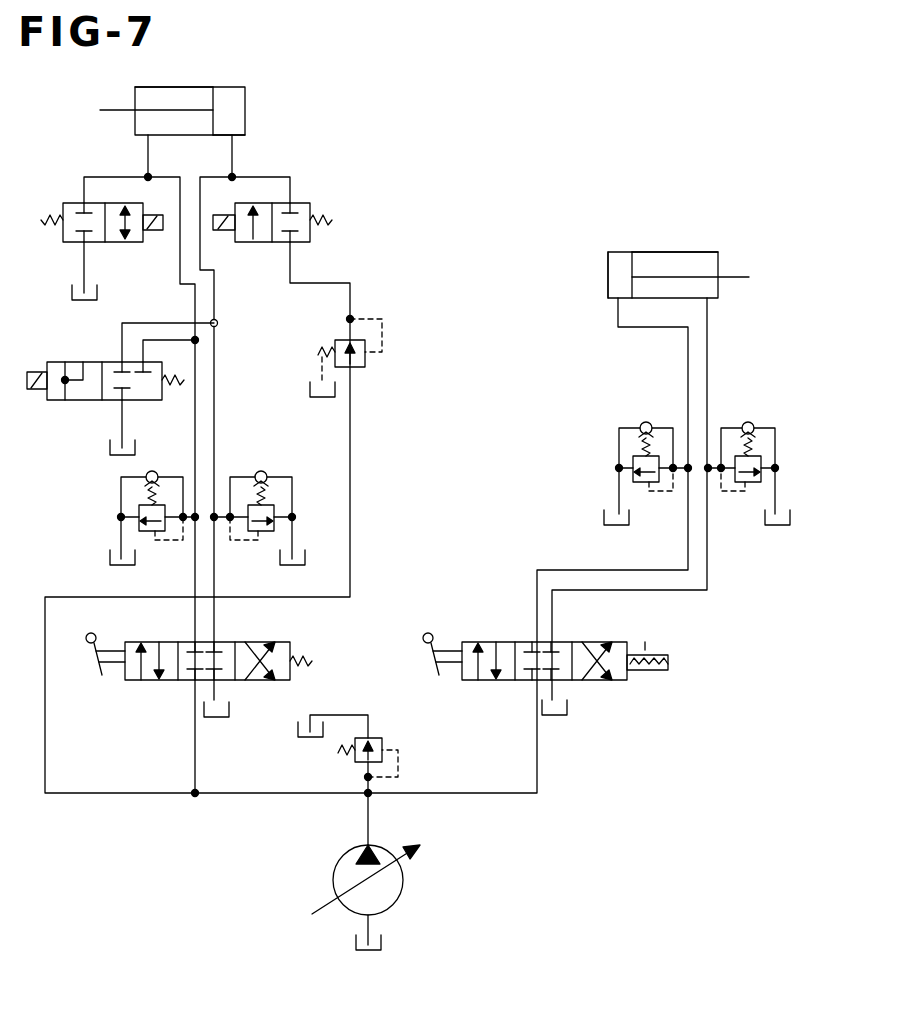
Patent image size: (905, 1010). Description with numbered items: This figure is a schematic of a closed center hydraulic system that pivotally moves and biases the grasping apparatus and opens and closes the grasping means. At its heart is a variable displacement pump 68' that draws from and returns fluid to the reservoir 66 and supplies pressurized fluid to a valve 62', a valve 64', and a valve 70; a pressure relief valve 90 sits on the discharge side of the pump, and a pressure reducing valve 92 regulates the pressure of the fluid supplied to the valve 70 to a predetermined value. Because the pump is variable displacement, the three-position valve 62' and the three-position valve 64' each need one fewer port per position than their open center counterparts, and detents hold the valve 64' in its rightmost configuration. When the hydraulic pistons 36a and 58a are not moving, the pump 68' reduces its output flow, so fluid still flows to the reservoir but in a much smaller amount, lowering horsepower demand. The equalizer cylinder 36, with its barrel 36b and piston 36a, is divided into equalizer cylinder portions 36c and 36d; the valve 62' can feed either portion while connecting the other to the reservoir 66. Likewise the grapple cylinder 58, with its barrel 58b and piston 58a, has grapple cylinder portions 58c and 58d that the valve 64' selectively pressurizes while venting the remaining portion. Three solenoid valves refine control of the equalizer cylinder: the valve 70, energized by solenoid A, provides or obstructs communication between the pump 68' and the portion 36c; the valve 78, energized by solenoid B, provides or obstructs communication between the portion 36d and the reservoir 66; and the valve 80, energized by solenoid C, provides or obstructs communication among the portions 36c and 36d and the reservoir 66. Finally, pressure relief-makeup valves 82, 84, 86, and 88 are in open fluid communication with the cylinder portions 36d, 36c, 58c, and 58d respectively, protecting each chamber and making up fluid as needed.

The equalizer cylinder 36 is at (191, 80).
The hydraulic piston 36a is at (218, 95).
The equalizer cylinder barrel 36b is at (151, 86).
The equalizer cylinder portion 36c is at (236, 121).
The equalizer cylinder portion 36d is at (145, 122).
The grapple cylinder 58 is at (680, 245).
The hydraulic piston 58a is at (632, 288).
The grapple cylinder barrel 58b is at (650, 251).
The grapple cylinder portion 58c is at (608, 271).
The grapple cylinder portion 58d is at (708, 262).
The valve 62' is at (196, 683).
The valve 64' is at (545, 642).
The reservoir 66 is at (90, 301).
The variable displacement pump 68' is at (393, 880).
The valve 70 is at (265, 243).
The valve 78 is at (140, 243).
The valve 80 is at (110, 401).
The pressure relief-makeup valve 82 is at (155, 532).
The pressure relief-makeup valve 84 is at (257, 532).
The pressure relief-makeup valve 86 is at (652, 483).
The pressure relief-makeup valve 88 is at (745, 483).
The pressure relief valve 90 is at (373, 738).
The pressure reducing valve 92 is at (366, 346).